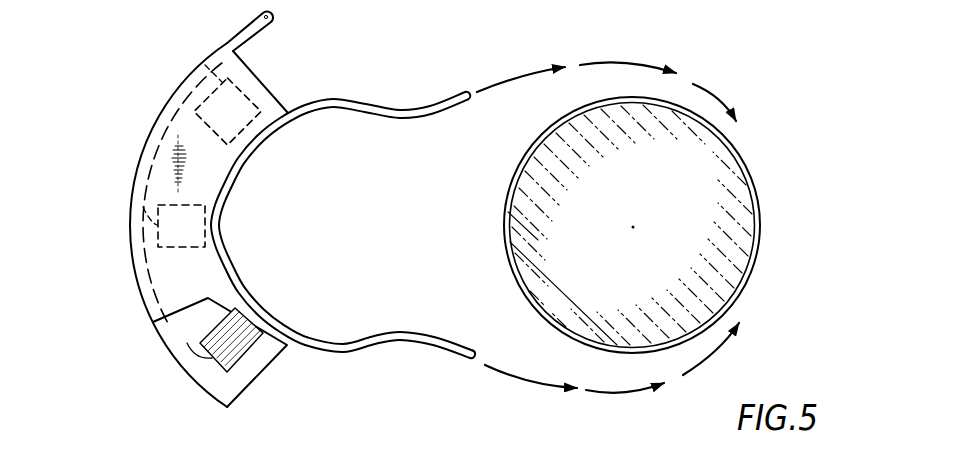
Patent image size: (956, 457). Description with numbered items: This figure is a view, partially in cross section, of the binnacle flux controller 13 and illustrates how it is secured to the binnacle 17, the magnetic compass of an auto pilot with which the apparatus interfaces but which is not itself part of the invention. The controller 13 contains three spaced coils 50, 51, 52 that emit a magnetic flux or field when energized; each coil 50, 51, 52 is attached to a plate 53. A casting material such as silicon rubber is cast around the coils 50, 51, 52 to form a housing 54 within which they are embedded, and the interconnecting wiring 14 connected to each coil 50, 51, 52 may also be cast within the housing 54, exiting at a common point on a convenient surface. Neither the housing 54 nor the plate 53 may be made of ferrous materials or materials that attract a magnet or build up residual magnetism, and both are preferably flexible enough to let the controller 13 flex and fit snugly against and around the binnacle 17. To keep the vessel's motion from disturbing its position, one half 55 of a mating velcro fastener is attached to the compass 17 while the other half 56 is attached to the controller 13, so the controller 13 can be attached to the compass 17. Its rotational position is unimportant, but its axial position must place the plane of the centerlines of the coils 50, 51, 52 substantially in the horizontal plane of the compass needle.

The binnacle flux controller 13 is at (150, 133).
The interconnecting wiring 14 is at (256, 31).
The binnacle 17 is at (723, 163).
The coil 50 is at (243, 365).
The coil 51 is at (160, 243).
The coil 52 is at (203, 103).
The plate 53 is at (284, 347).
The housing 54 is at (205, 380).
The half of mating velcro fastener 55 is at (757, 192).
The other half of mating velcro fastener 56 is at (447, 352).